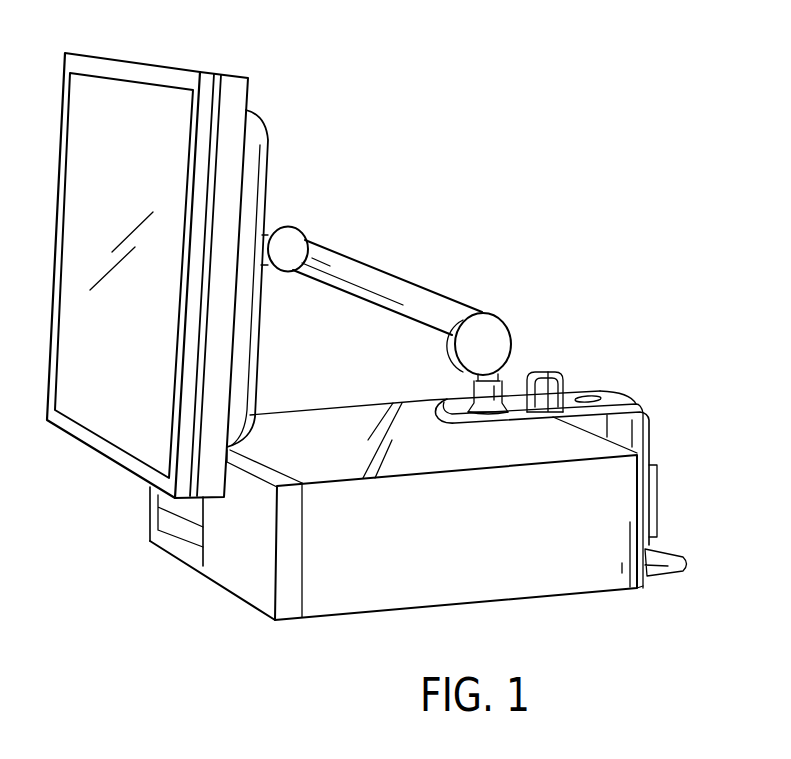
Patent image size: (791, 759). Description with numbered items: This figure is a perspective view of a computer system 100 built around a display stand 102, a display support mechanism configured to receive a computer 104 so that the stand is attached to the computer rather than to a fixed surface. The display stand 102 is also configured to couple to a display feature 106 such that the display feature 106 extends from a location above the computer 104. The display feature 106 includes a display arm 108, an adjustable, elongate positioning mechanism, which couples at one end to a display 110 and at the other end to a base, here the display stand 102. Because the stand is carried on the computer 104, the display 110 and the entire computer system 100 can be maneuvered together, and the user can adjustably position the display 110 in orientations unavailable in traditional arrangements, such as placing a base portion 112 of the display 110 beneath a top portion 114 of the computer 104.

The computer system 100 is at (617, 215).
The display stand 102 is at (633, 405).
The computer 104 is at (472, 554).
The display feature 106 is at (412, 213).
The display arm 108 is at (463, 305).
The display 110 is at (193, 65).
The base portion 112 is at (108, 462).
The top portion 114 is at (262, 470).